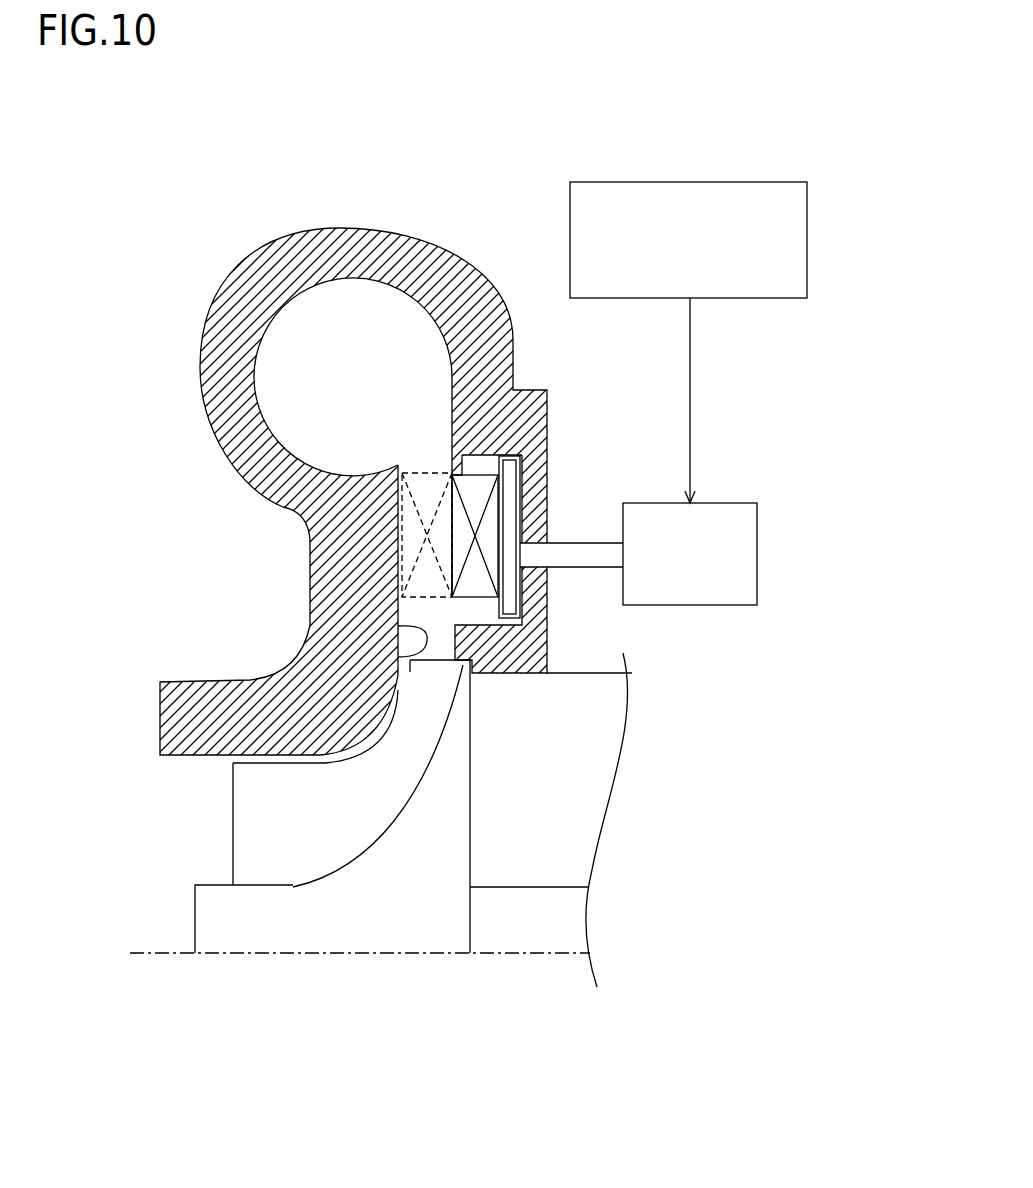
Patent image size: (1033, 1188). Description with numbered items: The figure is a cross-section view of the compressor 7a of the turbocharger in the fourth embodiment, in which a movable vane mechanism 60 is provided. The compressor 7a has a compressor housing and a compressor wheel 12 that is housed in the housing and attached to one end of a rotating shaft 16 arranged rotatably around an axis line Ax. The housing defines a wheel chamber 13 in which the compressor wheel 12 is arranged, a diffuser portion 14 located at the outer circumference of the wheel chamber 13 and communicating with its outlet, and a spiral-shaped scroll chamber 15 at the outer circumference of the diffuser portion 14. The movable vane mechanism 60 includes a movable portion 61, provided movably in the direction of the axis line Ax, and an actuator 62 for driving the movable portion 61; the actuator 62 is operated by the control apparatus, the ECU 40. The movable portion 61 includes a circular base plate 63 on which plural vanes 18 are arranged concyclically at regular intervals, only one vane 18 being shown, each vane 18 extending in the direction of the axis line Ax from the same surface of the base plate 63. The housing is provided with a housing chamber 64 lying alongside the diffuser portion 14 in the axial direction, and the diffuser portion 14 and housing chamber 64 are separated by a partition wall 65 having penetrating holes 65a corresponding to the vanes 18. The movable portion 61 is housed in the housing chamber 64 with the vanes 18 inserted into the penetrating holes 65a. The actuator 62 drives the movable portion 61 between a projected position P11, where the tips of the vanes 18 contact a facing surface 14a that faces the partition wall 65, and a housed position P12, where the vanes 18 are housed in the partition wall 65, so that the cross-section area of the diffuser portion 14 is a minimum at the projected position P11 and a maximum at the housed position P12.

The compressor 7a is at (208, 220).
The compressor wheel 12 is at (233, 863).
The wheel chamber 13 is at (318, 818).
The diffuser portion 14 is at (413, 538).
The facing surface 14a is at (413, 648).
The scroll chamber 15 is at (352, 318).
The rotating shaft 16 is at (560, 885).
The vane 18 is at (490, 458).
The ECU (control apparatus) 40 is at (685, 182).
The movable vane mechanism 60 is at (682, 619).
The movable portion 61 is at (512, 605).
The actuator 62 is at (758, 541).
The base plate 63 is at (508, 470).
The housing chamber 64 is at (497, 452).
The partition wall 65 is at (450, 603).
The penetrating hole 65a is at (447, 517).
The projected position P11 is at (418, 466).
The housed position P12 is at (487, 605).
The axis line Ax is at (140, 957).